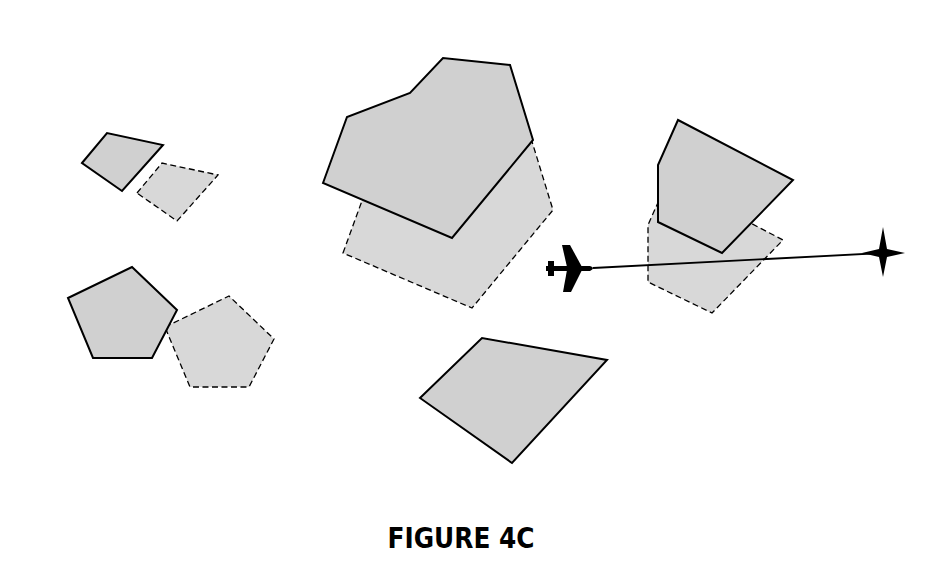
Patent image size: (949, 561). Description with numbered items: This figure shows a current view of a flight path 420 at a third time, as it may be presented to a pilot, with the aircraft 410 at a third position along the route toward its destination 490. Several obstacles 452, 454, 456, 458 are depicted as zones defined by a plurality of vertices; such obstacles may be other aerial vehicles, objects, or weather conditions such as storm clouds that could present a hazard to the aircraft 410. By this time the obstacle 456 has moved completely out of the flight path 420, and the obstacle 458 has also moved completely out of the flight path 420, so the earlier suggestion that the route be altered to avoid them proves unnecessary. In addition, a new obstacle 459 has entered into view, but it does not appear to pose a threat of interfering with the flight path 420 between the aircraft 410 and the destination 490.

The aircraft 410 is at (582, 247).
The flight path 420 is at (822, 265).
The obstacle 452 is at (83, 160).
The obstacle 454 is at (122, 340).
The obstacle 456 is at (355, 140).
The obstacle 458 is at (713, 153).
The obstacle 459 is at (452, 395).
The destination 490 is at (883, 227).